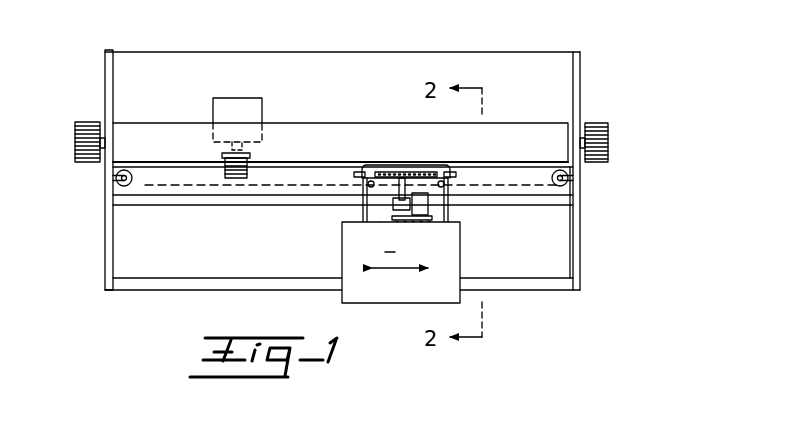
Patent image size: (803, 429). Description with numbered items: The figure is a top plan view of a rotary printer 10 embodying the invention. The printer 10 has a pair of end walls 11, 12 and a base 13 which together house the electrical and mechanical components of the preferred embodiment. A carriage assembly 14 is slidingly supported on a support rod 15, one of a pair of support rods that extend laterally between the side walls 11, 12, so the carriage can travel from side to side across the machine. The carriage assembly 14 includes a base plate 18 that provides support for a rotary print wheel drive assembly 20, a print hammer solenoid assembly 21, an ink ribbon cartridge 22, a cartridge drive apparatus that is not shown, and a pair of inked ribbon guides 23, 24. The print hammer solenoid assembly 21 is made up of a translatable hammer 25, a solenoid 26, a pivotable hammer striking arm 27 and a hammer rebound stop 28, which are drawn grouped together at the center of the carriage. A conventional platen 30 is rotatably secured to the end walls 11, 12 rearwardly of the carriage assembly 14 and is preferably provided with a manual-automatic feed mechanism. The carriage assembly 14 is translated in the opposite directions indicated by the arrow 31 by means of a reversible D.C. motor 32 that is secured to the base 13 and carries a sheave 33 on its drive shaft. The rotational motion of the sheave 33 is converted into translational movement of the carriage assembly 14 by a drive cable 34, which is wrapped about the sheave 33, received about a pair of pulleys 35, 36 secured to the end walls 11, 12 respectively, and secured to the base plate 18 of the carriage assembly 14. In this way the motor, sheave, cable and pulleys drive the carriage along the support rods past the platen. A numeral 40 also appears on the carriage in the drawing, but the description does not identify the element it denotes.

The printer 10 is at (145, 46).
The end wall 11 is at (105, 78).
The end wall 12 is at (580, 50).
The base 13 is at (552, 265).
The carriage assembly 14 is at (340, 218).
The support rod 15 is at (558, 204).
The base plate 18 is at (381, 212).
The rotary print wheel drive assembly 20 is at (401, 158).
The print hammer solenoid assembly 21 is at (448, 190).
The ink ribbon cartridge 22 is at (350, 298).
The inked ribbon guide 23 is at (362, 170).
The inked ribbon guide 24 is at (453, 170).
The translatable hammer 25 is at (395, 196).
The solenoid 26 is at (436, 192).
The pivotable hammer striking arm 27 is at (414, 220).
The hammer rebound stop 28 is at (400, 212).
The platen 30 is at (150, 130).
The arrow 31 is at (393, 255).
The reversible D.C. motor 32 is at (226, 105).
The sheave 33 is at (225, 170).
The drive cable 34 is at (148, 186).
The pulley 35 is at (118, 187).
The pulley 36 is at (568, 190).
The scale 40 is at (415, 168).